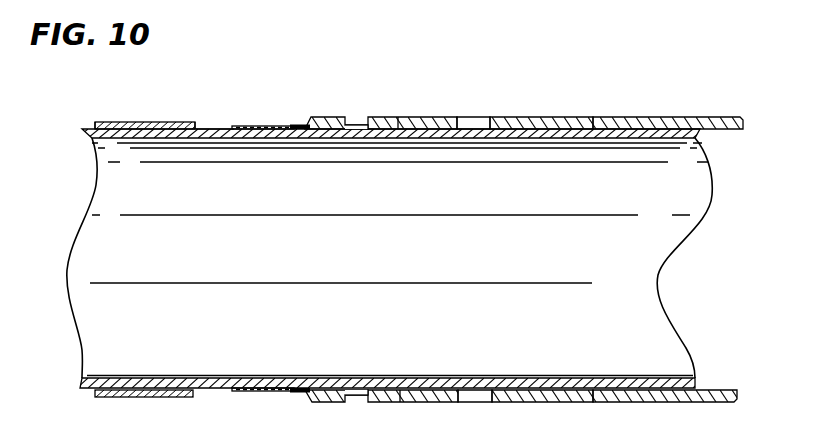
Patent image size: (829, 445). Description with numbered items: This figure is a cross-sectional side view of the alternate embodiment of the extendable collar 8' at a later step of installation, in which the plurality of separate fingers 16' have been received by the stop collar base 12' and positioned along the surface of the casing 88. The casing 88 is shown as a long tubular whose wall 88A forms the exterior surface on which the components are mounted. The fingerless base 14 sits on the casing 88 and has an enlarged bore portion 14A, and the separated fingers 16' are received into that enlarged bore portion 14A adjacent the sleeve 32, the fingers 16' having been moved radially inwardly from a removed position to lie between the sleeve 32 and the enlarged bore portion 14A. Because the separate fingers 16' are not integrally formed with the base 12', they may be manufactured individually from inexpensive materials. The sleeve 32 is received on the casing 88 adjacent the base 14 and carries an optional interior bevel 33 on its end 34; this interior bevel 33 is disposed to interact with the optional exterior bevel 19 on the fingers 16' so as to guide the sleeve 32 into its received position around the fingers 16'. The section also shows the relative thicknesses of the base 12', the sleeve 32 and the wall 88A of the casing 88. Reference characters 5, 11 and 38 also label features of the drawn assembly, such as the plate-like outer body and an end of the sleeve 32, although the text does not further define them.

The composite plate / panel 5 is at (713, 117).
The extendable collar 8' is at (446, 208).
The plate section 11 is at (594, 117).
The stop collar base 12' is at (336, 242).
The fingerless base 14 is at (385, 117).
The enlarged bore portion 14A is at (303, 125).
The separate fingers 16' is at (263, 237).
The exterior bevel 19 is at (231, 128).
The sleeve 32 is at (154, 122).
The interior bevel 33 is at (203, 128).
The end of the sleeve 34 is at (198, 127).
The plate end 38 is at (95, 123).
The casing 88 is at (205, 261).
The wall of the casing 88A is at (216, 128).